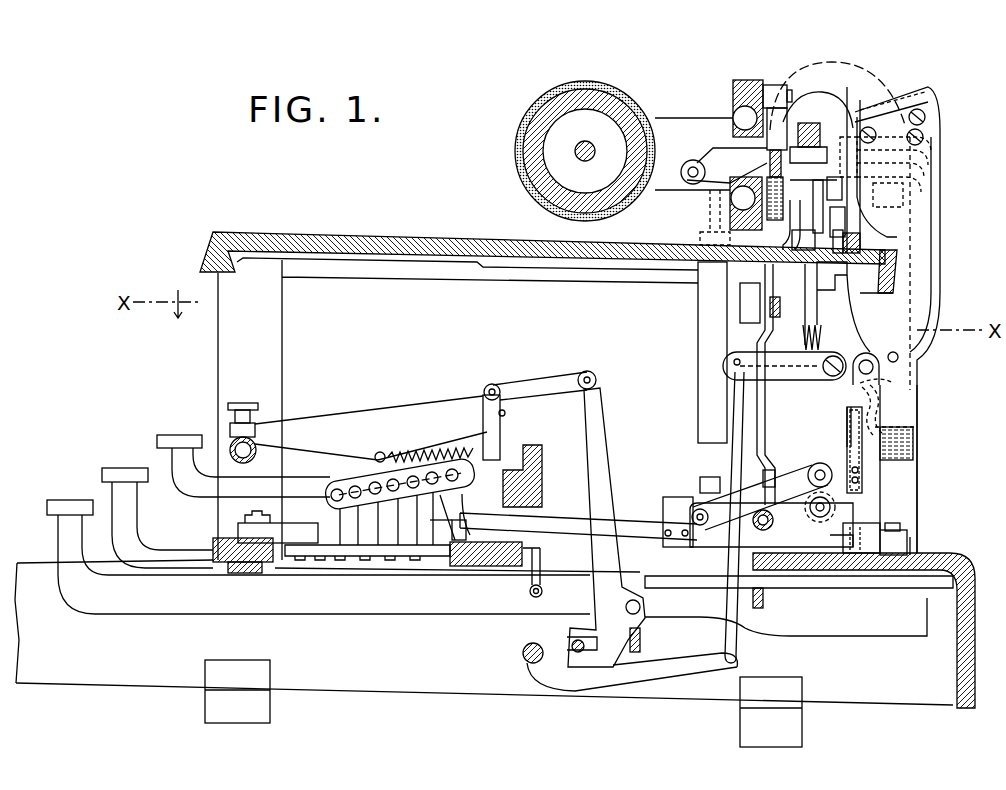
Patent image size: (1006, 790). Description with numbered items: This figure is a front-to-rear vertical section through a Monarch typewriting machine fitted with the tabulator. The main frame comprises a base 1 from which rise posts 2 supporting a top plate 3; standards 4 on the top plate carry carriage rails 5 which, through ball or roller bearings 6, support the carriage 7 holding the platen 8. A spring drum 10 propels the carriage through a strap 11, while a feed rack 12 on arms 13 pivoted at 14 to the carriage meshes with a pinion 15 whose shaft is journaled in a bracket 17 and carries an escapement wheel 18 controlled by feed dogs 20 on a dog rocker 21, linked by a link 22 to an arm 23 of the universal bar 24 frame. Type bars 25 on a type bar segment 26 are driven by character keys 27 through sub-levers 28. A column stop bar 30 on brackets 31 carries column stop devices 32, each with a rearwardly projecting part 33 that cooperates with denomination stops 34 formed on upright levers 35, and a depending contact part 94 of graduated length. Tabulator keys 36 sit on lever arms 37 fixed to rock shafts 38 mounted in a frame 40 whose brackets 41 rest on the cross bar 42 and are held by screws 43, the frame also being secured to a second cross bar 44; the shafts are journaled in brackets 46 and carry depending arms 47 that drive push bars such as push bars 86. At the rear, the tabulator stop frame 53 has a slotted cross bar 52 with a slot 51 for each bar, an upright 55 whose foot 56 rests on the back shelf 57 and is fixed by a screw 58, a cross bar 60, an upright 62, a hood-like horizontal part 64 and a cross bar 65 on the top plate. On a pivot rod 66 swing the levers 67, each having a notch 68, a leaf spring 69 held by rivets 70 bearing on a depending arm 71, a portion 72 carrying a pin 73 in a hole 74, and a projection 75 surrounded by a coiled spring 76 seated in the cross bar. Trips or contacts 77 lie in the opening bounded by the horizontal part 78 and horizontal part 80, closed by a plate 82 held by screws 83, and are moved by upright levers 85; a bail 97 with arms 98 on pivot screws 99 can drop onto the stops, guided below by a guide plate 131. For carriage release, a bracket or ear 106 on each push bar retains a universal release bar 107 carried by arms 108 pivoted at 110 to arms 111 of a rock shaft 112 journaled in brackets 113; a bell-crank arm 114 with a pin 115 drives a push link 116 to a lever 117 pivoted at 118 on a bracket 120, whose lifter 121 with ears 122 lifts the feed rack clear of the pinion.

The base 1 is at (427, 686).
The posts 2 is at (286, 360).
The top plate 3 is at (352, 234).
The standards 4 is at (818, 78).
The carriage rails 5 is at (735, 103).
The ball or roller bearings 6 is at (738, 121).
The carriage 7 is at (670, 118).
The platen 8 is at (520, 168).
The spring drum 10 is at (700, 365).
The strap 11 is at (700, 238).
The feed rack 12 is at (770, 165).
The arms 13 is at (712, 152).
The pivot 14 is at (687, 168).
The pinion 15 is at (786, 228).
The bracket 17 is at (805, 241).
The escapement wheel 18 is at (847, 225).
The feed dogs 20 is at (850, 245).
The dog rocker 21 is at (838, 270).
The link 22 is at (733, 470).
The arm 23 is at (698, 660).
The universal bar 24 is at (641, 638).
The type bars 25 is at (337, 437).
The type bar segment 26 is at (536, 448).
The character keys 27 is at (102, 473).
The sub-levers 28 is at (600, 450).
The column stop bar 30 is at (812, 120).
The brackets 31 is at (780, 123).
The column stop devices 32 is at (833, 112).
The rearwardly projecting part 33 is at (866, 120).
The denomination stops 34 is at (873, 118).
The upright levers 35 is at (907, 275).
The keys 36 is at (172, 436).
The lever arm 37 is at (288, 487).
The rock shafts 38 is at (336, 504).
The frame 40 is at (333, 555).
The brackets 41 is at (291, 530).
The cross bar 42 is at (222, 540).
The screws 43 is at (259, 508).
The second cross bar 44 is at (487, 568).
The brackets 46 is at (400, 507).
The arms 47 is at (467, 527).
The slot 51 is at (872, 537).
The cross bar 52 is at (861, 540).
The tabulator stop frame 53 is at (906, 405).
The upright 55 is at (905, 483).
The foot 56 is at (906, 540).
The back shelf 57 is at (912, 570).
The screw 58 is at (900, 523).
The cross bar 60 is at (900, 432).
The upright 62 is at (938, 290).
The horizontal part 64 is at (912, 108).
The cross bar 65 is at (890, 237).
The pivot rod 66 is at (868, 358).
The levers 67 is at (885, 455).
The notch 68 is at (861, 506).
The leaf spring 69 is at (805, 418).
The rivets 70 is at (861, 450).
The depending arm 71 is at (855, 408).
The arm or portion 72 is at (893, 385).
The pin 73 is at (900, 357).
The hole 74 is at (893, 355).
The projection 75 is at (849, 438).
The coiled spring 76 is at (882, 420).
The trips or contacts 77 is at (840, 178).
The horizontal part 78 is at (888, 196).
The horizontal part 80 is at (924, 135).
The plate 82 is at (940, 150).
The screws 83 is at (940, 143).
The upright levers 85 is at (926, 168).
The push bars 86 is at (554, 522).
The contact part 94 is at (773, 181).
The bail 97 is at (845, 115).
The arms 98 is at (860, 112).
The pivot screws 99 is at (925, 117).
The bracket or ear 106 is at (663, 504).
The universal release bar 107 is at (705, 510).
The arms 108 is at (783, 478).
The pivot 110 is at (812, 480).
The arms 111 is at (823, 495).
The rock shaft 112 is at (826, 540).
The brackets 113 is at (868, 492).
The arm 114 is at (710, 512).
The pin 115 is at (753, 524).
The push link 116 is at (762, 405).
The lever 117 is at (767, 292).
The pivot 118 is at (777, 296).
The bracket 120 is at (743, 310).
The lifter 121 is at (772, 268).
The ears 122 is at (780, 178).
The guide plate 131 is at (808, 218).